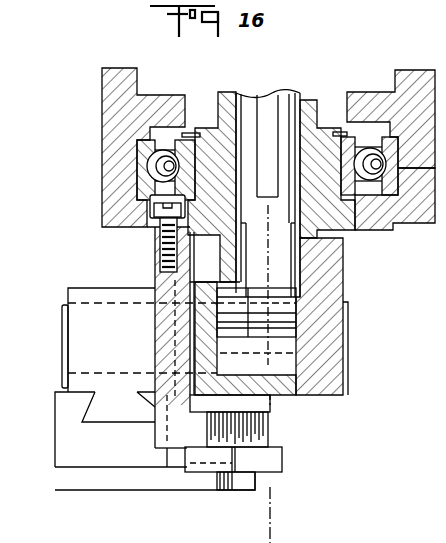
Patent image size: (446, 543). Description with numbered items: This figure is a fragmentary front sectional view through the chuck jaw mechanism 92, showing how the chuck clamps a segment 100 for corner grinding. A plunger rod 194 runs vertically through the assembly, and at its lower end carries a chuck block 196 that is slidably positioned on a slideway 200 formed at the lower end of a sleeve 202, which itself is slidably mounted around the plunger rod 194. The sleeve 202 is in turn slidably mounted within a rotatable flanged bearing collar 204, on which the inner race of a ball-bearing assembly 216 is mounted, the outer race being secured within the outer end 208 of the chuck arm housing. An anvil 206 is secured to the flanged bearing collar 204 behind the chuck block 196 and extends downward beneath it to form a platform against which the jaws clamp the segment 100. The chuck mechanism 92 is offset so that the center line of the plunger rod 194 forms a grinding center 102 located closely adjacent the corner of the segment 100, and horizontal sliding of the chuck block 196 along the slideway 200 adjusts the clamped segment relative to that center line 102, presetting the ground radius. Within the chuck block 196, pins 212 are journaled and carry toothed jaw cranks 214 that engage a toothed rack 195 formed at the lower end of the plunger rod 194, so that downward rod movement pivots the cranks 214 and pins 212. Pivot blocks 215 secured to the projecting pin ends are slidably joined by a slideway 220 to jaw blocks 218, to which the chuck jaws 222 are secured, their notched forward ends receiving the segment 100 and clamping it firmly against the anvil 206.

The chuck mechanism 92 is at (301, 483).
The segment 100 is at (270, 456).
The grinding center 102 is at (270, 505).
The plunger rod 194 is at (255, 98).
The toothed rack 195 is at (283, 323).
The chuck block 196 is at (200, 331).
The slideway 200 is at (327, 258).
The sleeve 202 is at (226, 105).
The flanged bearing collar 204 is at (326, 148).
The anvil 206 is at (256, 430).
The outer end of the chuck arm housing 208 is at (133, 112).
The pins 212 is at (66, 345).
The toothed jaw cranks 214 is at (285, 346).
The pivot blocks 215 is at (90, 296).
The ball-bearing assembly 216 is at (158, 168).
The jaw blocks 218 is at (67, 448).
The slideway 220 is at (103, 407).
The chuck jaws 222 is at (168, 483).